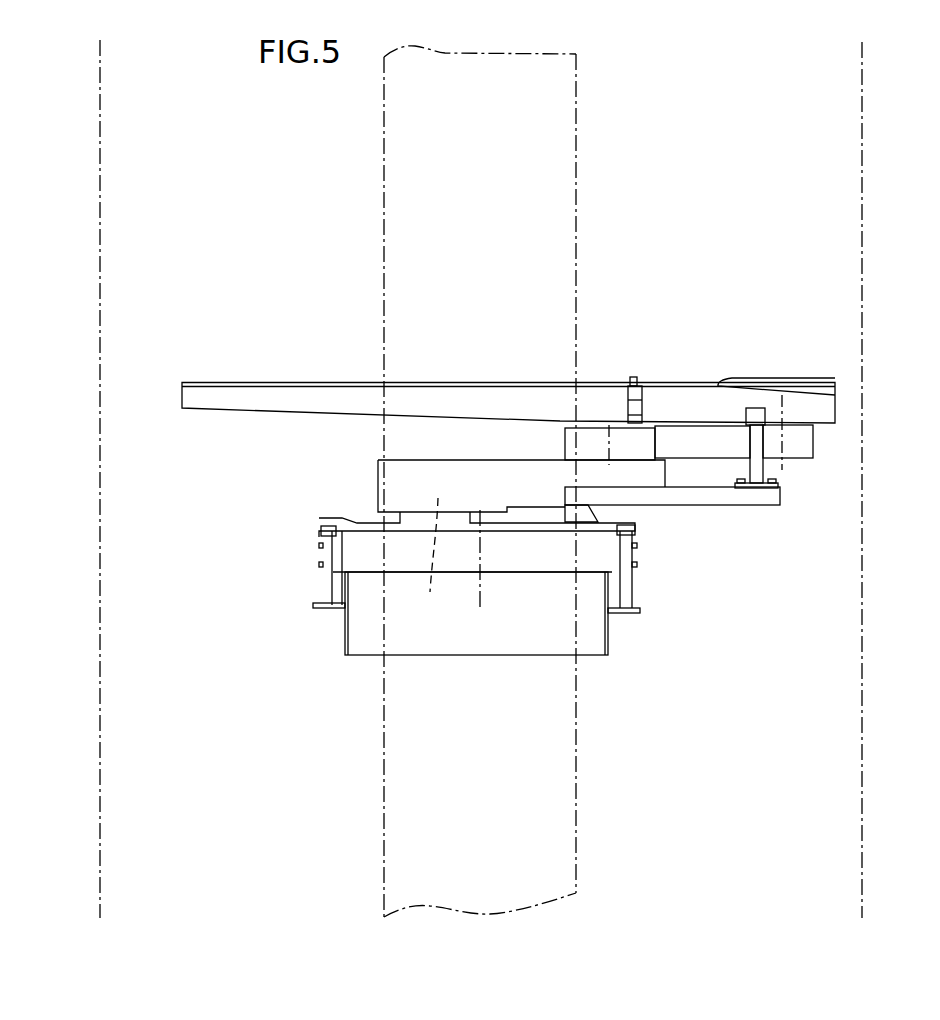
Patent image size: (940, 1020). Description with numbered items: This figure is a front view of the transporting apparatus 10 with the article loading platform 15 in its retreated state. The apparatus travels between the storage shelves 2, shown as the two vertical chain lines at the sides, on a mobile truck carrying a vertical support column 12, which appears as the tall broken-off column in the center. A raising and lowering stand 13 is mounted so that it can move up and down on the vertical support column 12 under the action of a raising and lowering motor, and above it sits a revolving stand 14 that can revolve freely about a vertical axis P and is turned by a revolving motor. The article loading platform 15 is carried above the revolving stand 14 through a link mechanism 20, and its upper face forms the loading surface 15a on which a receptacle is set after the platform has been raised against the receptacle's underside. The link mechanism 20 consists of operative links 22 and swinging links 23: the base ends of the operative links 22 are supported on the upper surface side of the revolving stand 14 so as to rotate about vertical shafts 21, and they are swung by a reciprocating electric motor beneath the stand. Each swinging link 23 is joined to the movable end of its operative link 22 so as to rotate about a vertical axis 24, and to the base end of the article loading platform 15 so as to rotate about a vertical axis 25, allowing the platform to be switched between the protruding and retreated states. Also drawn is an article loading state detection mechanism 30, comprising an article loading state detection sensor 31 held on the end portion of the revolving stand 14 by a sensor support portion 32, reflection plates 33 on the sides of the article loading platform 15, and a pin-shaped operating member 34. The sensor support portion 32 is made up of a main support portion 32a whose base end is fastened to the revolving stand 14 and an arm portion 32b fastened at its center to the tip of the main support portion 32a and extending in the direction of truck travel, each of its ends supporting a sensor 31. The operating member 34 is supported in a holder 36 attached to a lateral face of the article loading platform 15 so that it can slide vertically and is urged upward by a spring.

The storage shelves 2 is at (102, 173).
The transporting apparatus 10 is at (663, 742).
The vertical support column 12 is at (577, 216).
The raising and lowering stand 13 is at (590, 633).
The revolving stand 14 is at (347, 547).
The article loading platform 15 is at (228, 400).
The loading surface 15a is at (303, 380).
The link mechanism 20 is at (302, 490).
The vertical shafts 21 is at (434, 558).
The operative links 22 is at (403, 482).
The swinging links 23 is at (803, 443).
The vertical axis 24 is at (610, 440).
The vertical axis 25 is at (782, 412).
The article loading state detection mechanism 30 is at (707, 340).
The article loading state detection sensor 31 is at (750, 408).
The sensor support portion 32 is at (707, 535).
The main support portion 32a is at (718, 497).
The arm portion 32b is at (758, 465).
The reflection plates 33 is at (632, 420).
The operating member 34 is at (633, 380).
The holder 36 is at (612, 382).